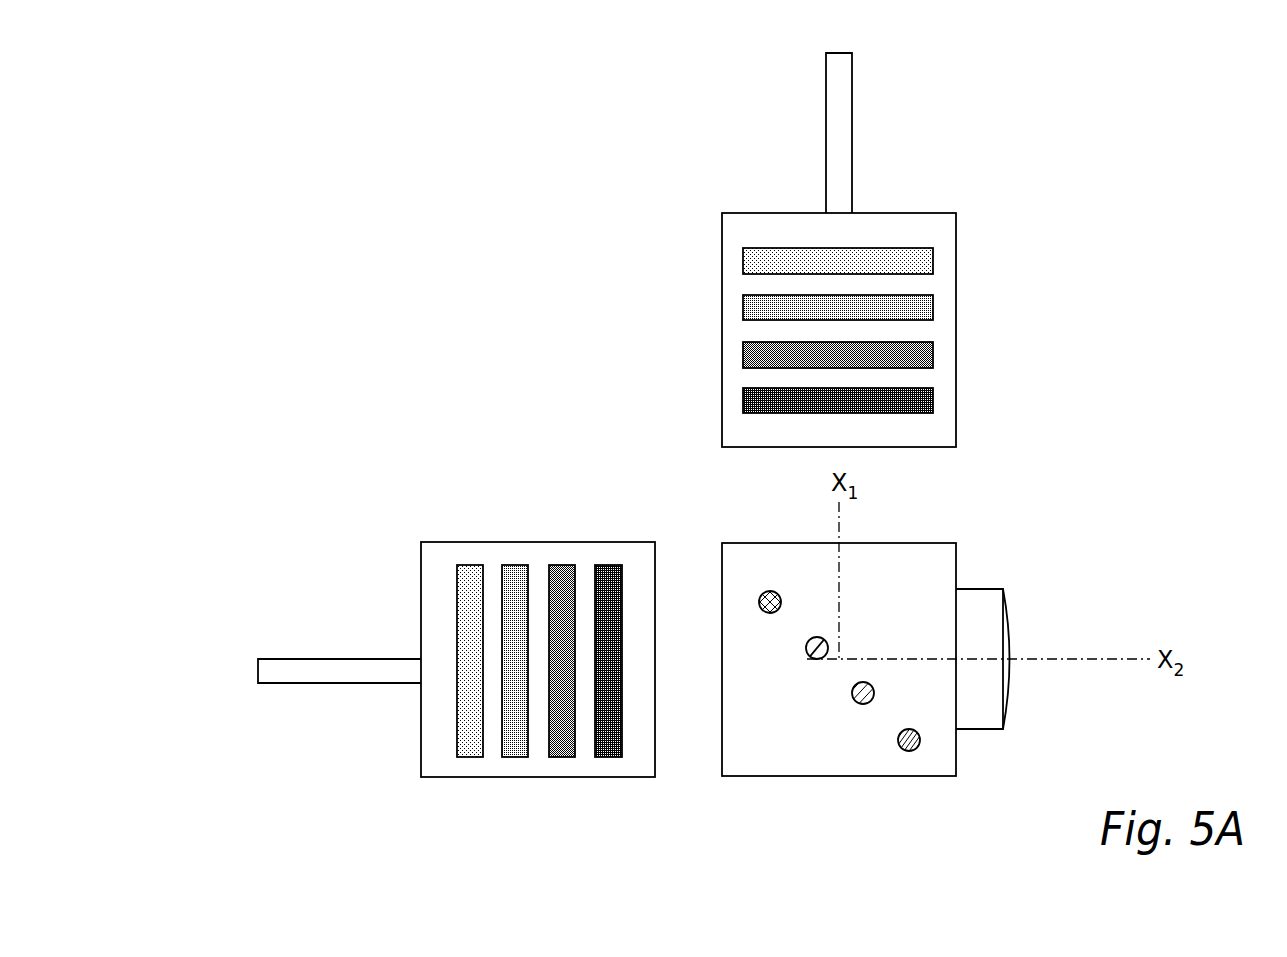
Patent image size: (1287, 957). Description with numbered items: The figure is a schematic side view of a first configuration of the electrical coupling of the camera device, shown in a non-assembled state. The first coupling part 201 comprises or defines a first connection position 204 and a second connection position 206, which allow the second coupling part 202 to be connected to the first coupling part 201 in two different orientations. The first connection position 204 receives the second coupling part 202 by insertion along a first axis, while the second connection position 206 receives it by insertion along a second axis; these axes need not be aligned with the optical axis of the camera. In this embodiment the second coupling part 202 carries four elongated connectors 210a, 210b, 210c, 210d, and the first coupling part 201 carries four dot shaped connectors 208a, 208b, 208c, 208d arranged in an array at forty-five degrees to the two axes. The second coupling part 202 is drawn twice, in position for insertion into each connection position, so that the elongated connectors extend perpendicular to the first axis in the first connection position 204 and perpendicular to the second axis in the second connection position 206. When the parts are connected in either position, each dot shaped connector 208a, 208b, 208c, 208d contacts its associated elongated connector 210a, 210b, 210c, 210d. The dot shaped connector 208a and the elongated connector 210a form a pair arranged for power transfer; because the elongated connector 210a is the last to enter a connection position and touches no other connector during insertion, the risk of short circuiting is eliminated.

The first coupling part 201 is at (1037, 604).
The second coupling part 202 is at (451, 480).
The first connection position 204 is at (735, 540).
The second connection position 206 is at (742, 620).
The dot shaped connector 208a is at (781, 602).
The dot shaped connector 208b is at (828, 645).
The dot shaped connector 208c is at (852, 693).
The dot shaped connector 208d is at (898, 740).
The elongated connector 210a is at (757, 262).
The elongated connector 210b is at (753, 316).
The elongated connector 210c is at (748, 362).
The elongated connector 210d is at (748, 408).